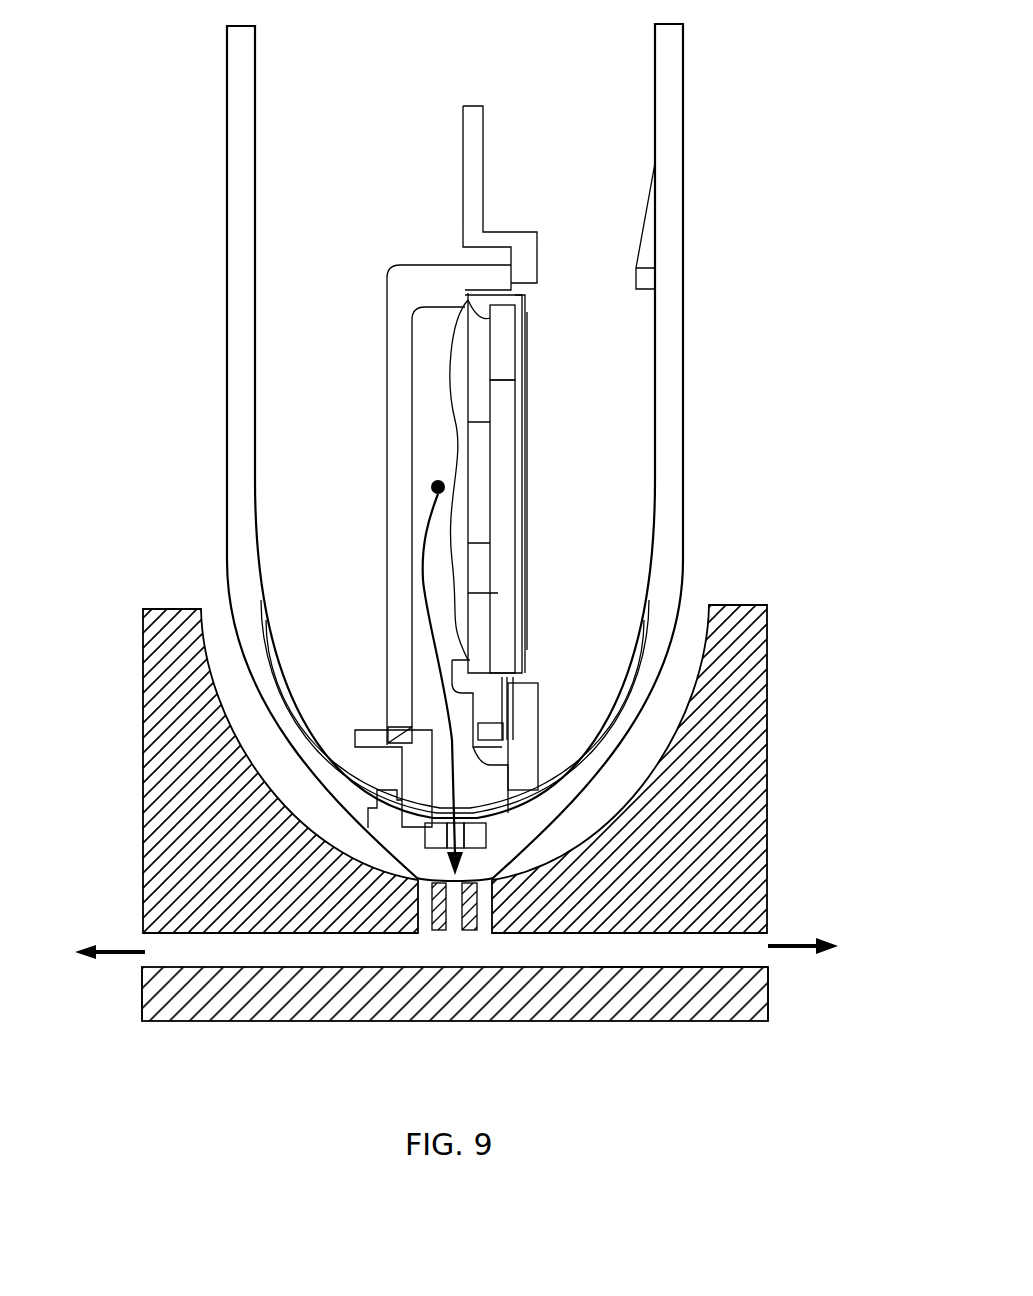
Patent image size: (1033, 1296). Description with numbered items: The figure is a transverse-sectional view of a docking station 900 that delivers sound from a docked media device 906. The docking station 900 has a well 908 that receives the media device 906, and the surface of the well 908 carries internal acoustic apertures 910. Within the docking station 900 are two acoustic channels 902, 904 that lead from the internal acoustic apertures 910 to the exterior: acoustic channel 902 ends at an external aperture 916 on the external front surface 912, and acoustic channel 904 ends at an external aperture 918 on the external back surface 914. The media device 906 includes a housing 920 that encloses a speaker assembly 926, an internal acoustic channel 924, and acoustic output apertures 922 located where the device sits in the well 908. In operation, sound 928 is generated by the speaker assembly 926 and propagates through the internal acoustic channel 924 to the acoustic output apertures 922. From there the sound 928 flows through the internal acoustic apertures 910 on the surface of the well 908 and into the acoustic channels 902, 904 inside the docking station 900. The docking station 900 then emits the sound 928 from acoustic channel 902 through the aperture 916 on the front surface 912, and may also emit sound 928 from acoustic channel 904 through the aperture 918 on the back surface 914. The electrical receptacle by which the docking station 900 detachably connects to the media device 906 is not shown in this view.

The docking station 900 is at (778, 565).
The acoustic channel 902 is at (313, 955).
The acoustic channel 904 is at (590, 953).
The media device 906 is at (716, 300).
The well 908 is at (690, 625).
The internal acoustic apertures 910 is at (480, 932).
The external front surface 912 is at (128, 749).
The external back surface 914 is at (784, 745).
The external aperture 916 is at (145, 962).
The external aperture 918 is at (780, 968).
The housing 920 is at (232, 248).
The acoustic output apertures 922 is at (433, 845).
The internal acoustic channel 924 is at (428, 402).
The speaker assembly 926 is at (480, 472).
The sound 928 is at (433, 638).